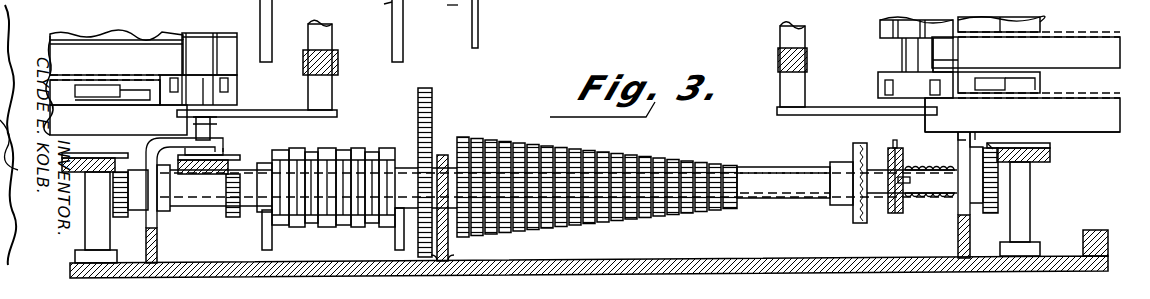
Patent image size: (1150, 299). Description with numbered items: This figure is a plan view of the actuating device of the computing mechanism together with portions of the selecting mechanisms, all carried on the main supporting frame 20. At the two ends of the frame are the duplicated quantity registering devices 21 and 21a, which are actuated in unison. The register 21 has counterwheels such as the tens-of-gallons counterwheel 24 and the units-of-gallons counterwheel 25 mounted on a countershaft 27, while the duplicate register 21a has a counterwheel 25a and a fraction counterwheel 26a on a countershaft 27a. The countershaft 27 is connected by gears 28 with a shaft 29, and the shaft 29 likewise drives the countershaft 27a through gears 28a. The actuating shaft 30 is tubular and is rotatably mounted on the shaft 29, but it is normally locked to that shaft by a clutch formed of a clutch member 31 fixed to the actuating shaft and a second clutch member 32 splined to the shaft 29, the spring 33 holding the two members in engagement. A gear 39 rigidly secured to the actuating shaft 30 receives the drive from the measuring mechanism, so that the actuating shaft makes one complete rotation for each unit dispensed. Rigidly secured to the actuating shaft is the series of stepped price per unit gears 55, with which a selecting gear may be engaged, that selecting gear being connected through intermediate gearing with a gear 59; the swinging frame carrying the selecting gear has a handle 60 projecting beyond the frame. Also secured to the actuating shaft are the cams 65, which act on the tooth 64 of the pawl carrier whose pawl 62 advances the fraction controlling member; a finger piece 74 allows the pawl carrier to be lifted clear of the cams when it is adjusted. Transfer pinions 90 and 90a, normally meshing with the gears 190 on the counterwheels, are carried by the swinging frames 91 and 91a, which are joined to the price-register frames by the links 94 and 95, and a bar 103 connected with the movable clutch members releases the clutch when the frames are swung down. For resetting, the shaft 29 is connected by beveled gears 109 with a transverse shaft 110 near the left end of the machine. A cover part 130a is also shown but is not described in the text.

The main supporting frame 20 is at (690, 262).
The quantity registering device 21 is at (1080, 138).
The quantity registering device 21a is at (122, 26).
The counterwheel 24 is at (1121, 126).
The counterwheel 25 is at (1122, 44).
The counterwheel 25a is at (75, 42).
The counterwheel 26a is at (168, 110).
The countershaft 27 is at (1025, 190).
The countershaft 27a is at (160, 246).
The gears 28 is at (1046, 158).
The gears 28a is at (122, 217).
The shaft 29 is at (180, 200).
The actuating shaft 30 is at (803, 199).
The clutch member 31 is at (857, 222).
The clutch member 32 is at (889, 214).
The spring 33 is at (946, 200).
The gear 39 is at (432, 141).
The stepped gears 55 is at (660, 160).
The gear 59 is at (444, 6).
The handle 60 is at (479, 12).
The pawl 62 is at (377, 7).
The projection or tooth 64 is at (272, 240).
The cams 65 is at (365, 150).
The finger piece 74 is at (272, 33).
The transfer pinions 90 is at (878, 90).
The transfer pinions 90a is at (238, 95).
The swinging frame 91 is at (777, 113).
The swinging frame 91a is at (333, 112).
The link 94 is at (779, 65).
The link 95 is at (338, 62).
The bar 103 is at (905, 147).
The beveled gears 109 is at (233, 156).
The transverse shaft 110 is at (212, 125).
The cover 130a is at (50, 40).
The gears 190 is at (1095, 27).